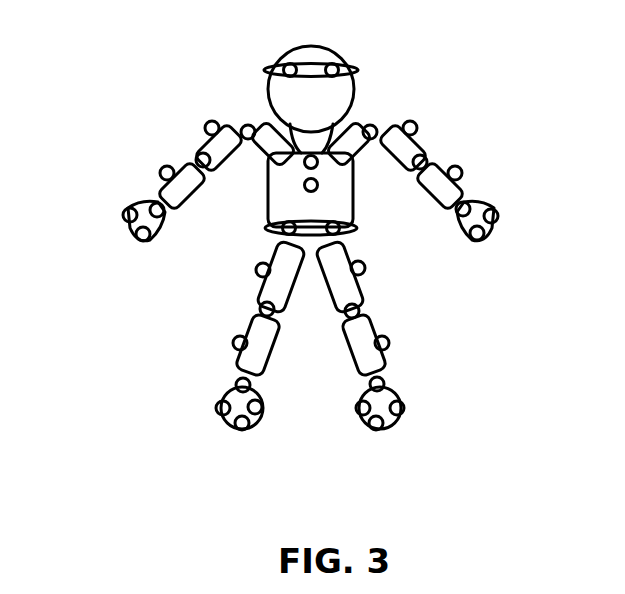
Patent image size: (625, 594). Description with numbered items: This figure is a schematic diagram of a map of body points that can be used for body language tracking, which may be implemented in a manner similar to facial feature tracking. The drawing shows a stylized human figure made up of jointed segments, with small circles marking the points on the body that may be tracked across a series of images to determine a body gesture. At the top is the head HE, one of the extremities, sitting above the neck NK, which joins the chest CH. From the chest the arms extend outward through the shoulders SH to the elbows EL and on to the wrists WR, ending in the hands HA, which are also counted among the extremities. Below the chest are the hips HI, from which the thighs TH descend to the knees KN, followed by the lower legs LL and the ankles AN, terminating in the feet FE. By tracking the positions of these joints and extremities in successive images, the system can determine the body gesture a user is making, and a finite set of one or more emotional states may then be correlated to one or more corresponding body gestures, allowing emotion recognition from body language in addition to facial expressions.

The head HE is at (265, 69).
The neck NK is at (305, 157).
The shoulders SH is at (371, 125).
The elbows EL is at (422, 156).
The wrists WR is at (468, 203).
The hands HA is at (122, 214).
The chest CH is at (303, 186).
The hips HI is at (265, 232).
The thighs TH is at (256, 273).
The knees KN is at (359, 309).
The lower legs LL is at (233, 345).
The ankles AN is at (383, 379).
The feet FE is at (216, 408).